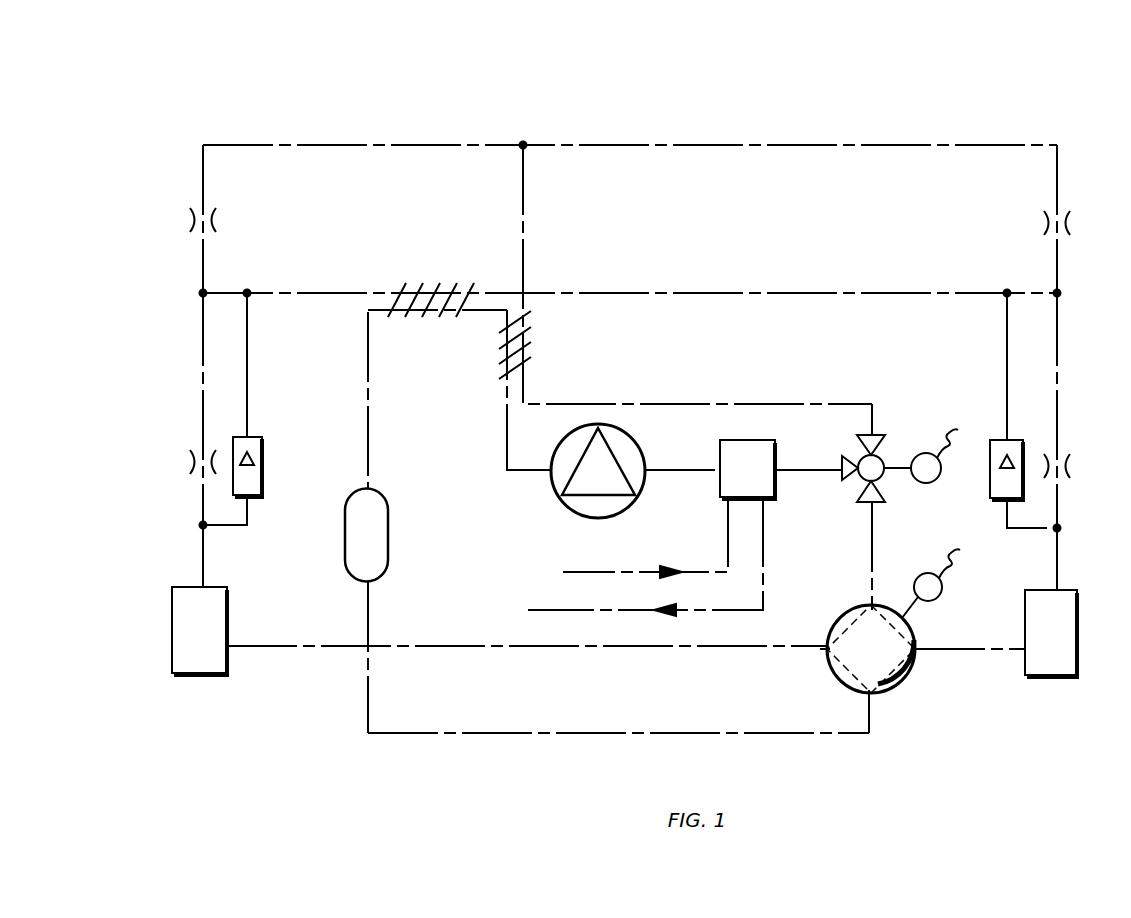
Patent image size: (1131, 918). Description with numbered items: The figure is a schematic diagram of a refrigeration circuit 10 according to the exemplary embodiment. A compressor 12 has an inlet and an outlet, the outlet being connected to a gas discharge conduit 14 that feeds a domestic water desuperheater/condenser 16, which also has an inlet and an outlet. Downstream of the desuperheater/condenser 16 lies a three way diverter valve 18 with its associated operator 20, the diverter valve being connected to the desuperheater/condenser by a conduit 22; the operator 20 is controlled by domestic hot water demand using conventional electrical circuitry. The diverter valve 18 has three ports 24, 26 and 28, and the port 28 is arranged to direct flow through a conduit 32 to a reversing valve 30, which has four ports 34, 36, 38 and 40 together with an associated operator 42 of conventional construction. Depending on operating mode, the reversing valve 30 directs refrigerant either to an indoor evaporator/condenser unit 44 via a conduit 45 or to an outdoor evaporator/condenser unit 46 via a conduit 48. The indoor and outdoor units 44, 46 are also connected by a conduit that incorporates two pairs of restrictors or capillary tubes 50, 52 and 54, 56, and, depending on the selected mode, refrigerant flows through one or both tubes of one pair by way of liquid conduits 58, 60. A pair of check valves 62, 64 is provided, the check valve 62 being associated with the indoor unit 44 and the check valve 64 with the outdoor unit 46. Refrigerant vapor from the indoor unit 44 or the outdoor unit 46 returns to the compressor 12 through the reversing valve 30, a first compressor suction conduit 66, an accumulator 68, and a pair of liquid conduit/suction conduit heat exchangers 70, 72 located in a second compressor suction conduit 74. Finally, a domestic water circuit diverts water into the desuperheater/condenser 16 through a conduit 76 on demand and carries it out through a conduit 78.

The refrigeration circuit 10 is at (1076, 94).
The compressor 12 is at (598, 471).
The gas discharge conduit 14 is at (698, 474).
The domestic water desuperheater/condenser 16 is at (747, 469).
The three way diverter valve 18 is at (858, 455).
The operator 20 is at (929, 483).
The conduit 22 is at (822, 470).
The port 24 is at (846, 488).
The port 26 is at (879, 435).
The port 28 is at (874, 497).
The reversing valve 30 is at (871, 649).
The conduit 32 is at (868, 540).
The port 34 is at (866, 608).
The port 36 is at (824, 652).
The port 38 is at (878, 694).
The port 40 is at (917, 646).
The operator 42 is at (920, 576).
The indoor evaporator/condenser unit 44 is at (199, 601).
The conduit 45 is at (284, 648).
The outdoor evaporator/condenser unit 46 is at (1051, 601).
The conduit 48 is at (992, 647).
The capillary tube 50 is at (188, 462).
The capillary tube 52 is at (188, 221).
The capillary tube 54 is at (1074, 224).
The capillary tube 56 is at (1072, 467).
The liquid conduit 58 is at (781, 143).
The liquid conduit 60 is at (772, 292).
The check valve 62 is at (264, 447).
The check valve 64 is at (1008, 437).
The first compressor suction conduit 66 is at (622, 733).
The accumulator 68 is at (386, 560).
The liquid conduit/suction conduit heat exchanger 70 is at (440, 285).
The liquid conduit/suction conduit heat exchanger 72 is at (527, 353).
The second compressor suction conduit 74 is at (505, 448).
The conduit 76 is at (620, 573).
The conduit 78 is at (688, 611).